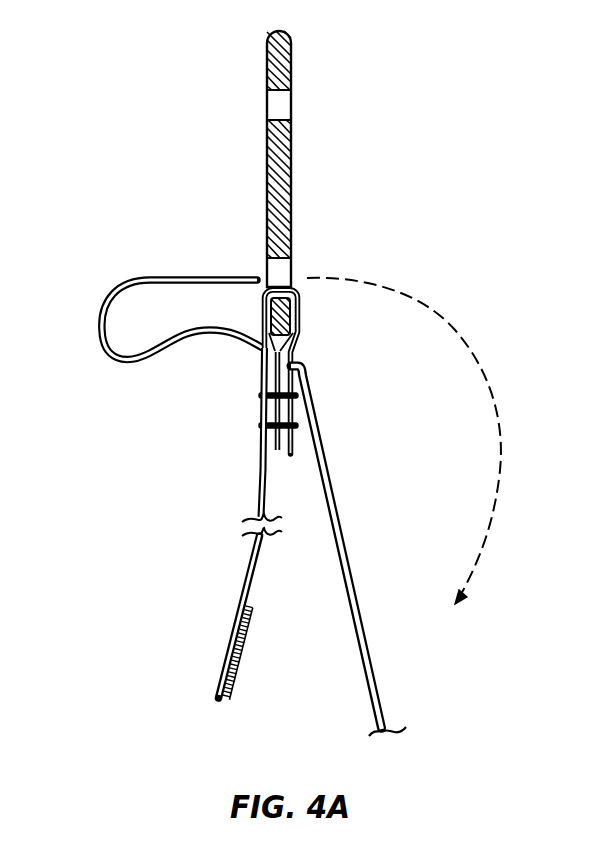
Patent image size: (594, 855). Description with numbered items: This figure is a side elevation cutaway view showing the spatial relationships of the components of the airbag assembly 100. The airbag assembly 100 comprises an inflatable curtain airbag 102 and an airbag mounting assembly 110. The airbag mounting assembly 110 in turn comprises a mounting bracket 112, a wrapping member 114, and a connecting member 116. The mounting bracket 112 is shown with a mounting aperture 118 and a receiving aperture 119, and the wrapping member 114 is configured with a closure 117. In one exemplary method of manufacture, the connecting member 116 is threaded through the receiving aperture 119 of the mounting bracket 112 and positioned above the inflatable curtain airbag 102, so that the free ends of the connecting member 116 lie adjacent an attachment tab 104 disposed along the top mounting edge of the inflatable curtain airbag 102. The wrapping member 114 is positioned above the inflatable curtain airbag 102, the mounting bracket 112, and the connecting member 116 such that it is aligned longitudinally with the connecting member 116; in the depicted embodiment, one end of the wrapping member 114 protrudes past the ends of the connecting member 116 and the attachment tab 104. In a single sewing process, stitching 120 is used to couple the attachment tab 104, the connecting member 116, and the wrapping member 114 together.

The airbag assembly 100 is at (462, 272).
The inflatable curtain airbag 102 is at (365, 628).
The attachment tab 104 is at (295, 440).
The airbag mounting assembly 110 is at (226, 454).
The mounting bracket 112 is at (292, 163).
The wrapping member 114 is at (140, 278).
The connecting member 116 is at (262, 347).
The closure 117 is at (228, 648).
The mounting aperture 118 is at (284, 103).
The receiving aperture 119 is at (265, 262).
The stitching 120 is at (260, 395).